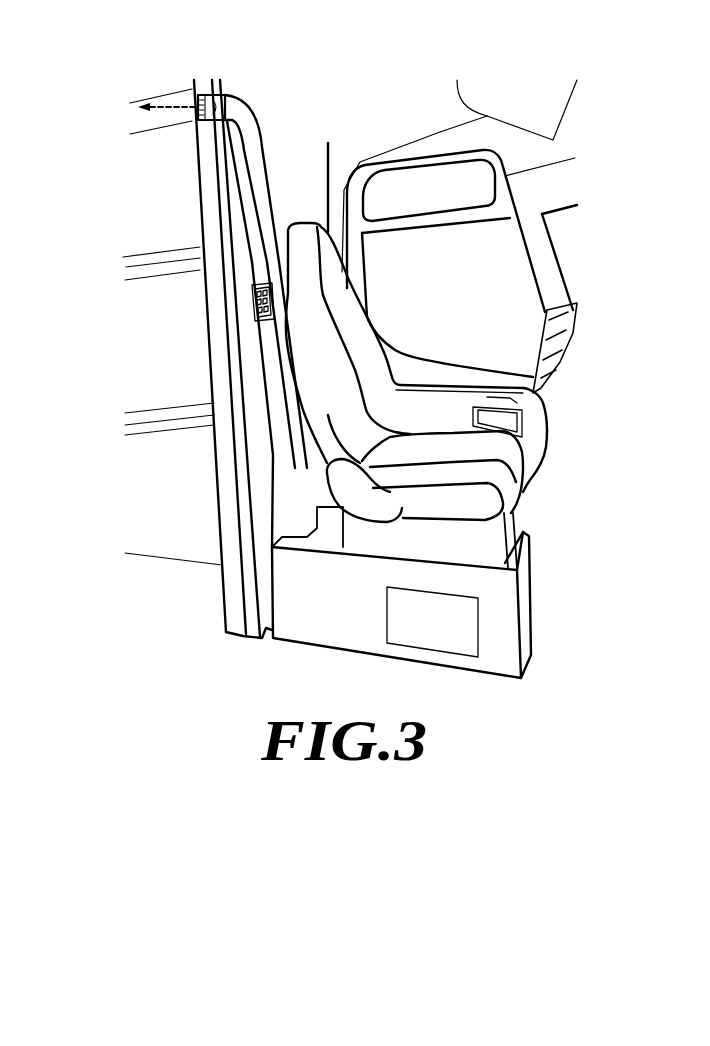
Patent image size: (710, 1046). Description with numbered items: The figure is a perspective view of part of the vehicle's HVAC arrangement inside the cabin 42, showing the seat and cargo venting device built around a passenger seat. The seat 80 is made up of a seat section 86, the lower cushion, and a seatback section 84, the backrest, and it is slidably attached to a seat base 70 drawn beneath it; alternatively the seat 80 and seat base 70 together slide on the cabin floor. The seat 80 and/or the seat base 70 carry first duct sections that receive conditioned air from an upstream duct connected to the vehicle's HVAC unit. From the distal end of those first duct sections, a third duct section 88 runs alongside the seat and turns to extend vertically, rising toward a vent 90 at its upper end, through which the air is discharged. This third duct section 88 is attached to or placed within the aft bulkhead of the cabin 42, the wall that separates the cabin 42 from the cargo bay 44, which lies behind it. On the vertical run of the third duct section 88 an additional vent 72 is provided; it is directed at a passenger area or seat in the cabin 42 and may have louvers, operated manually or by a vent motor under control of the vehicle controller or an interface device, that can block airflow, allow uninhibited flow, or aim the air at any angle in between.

The cabin 42 is at (522, 108).
The cargo bay 44 is at (165, 183).
The seat base 70 is at (505, 617).
The additional vent 72 is at (253, 305).
The seat 80 is at (495, 309).
The seatback section 84 is at (333, 407).
The seat section 86 is at (380, 522).
The third duct section 88 is at (252, 103).
The vent 90 is at (186, 121).